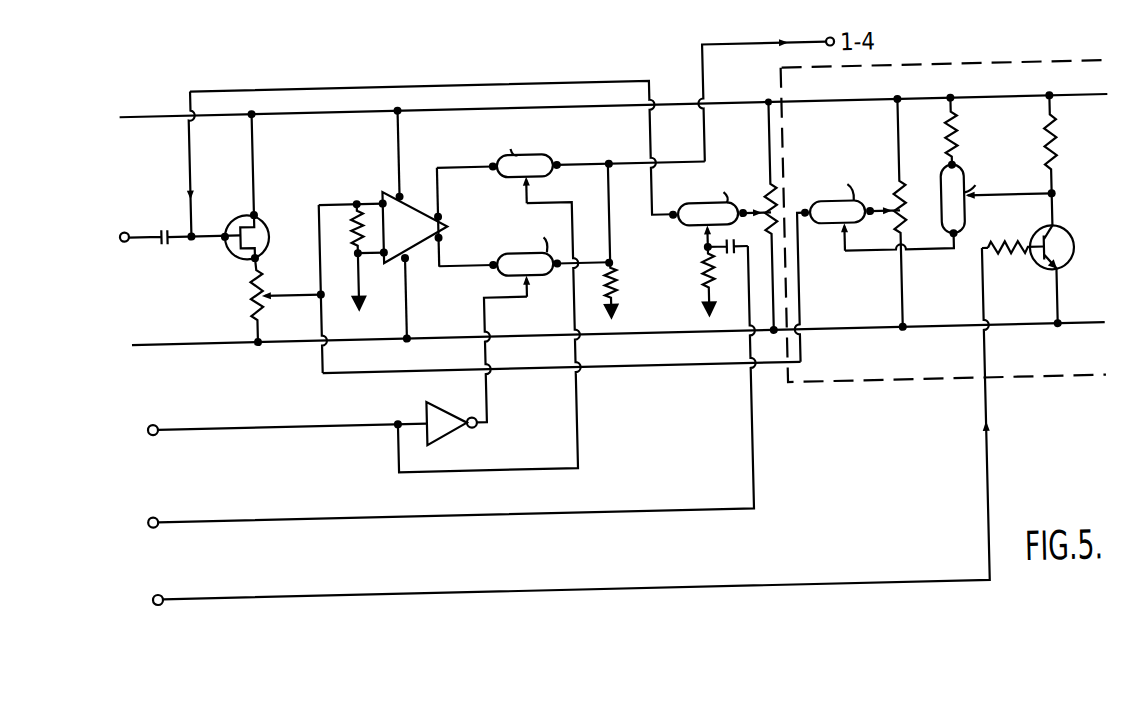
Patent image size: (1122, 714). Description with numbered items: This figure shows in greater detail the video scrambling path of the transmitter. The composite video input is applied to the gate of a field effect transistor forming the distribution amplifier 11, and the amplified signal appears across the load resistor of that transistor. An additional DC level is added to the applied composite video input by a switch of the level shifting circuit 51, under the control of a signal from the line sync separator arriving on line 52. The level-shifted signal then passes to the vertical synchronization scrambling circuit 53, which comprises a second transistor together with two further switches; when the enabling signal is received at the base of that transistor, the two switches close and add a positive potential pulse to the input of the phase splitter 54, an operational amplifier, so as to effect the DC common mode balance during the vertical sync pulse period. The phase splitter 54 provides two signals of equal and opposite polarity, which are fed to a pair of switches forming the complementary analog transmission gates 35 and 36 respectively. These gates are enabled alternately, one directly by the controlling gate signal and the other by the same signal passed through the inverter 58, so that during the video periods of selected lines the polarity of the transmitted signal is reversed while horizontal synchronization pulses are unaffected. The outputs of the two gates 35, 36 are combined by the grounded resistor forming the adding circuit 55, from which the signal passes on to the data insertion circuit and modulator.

The distribution amplifier 11 is at (268, 213).
The analog transmission gate 35 is at (511, 182).
The analog transmission gate 36 is at (503, 257).
The level shifting circuit 51 is at (702, 230).
The line 52 is at (750, 425).
The vertical synchronization scrambling circuit 53 is at (823, 390).
The phase splitter 54 is at (383, 225).
The adding circuit 55 is at (625, 241).
The inverter 58 is at (443, 385).